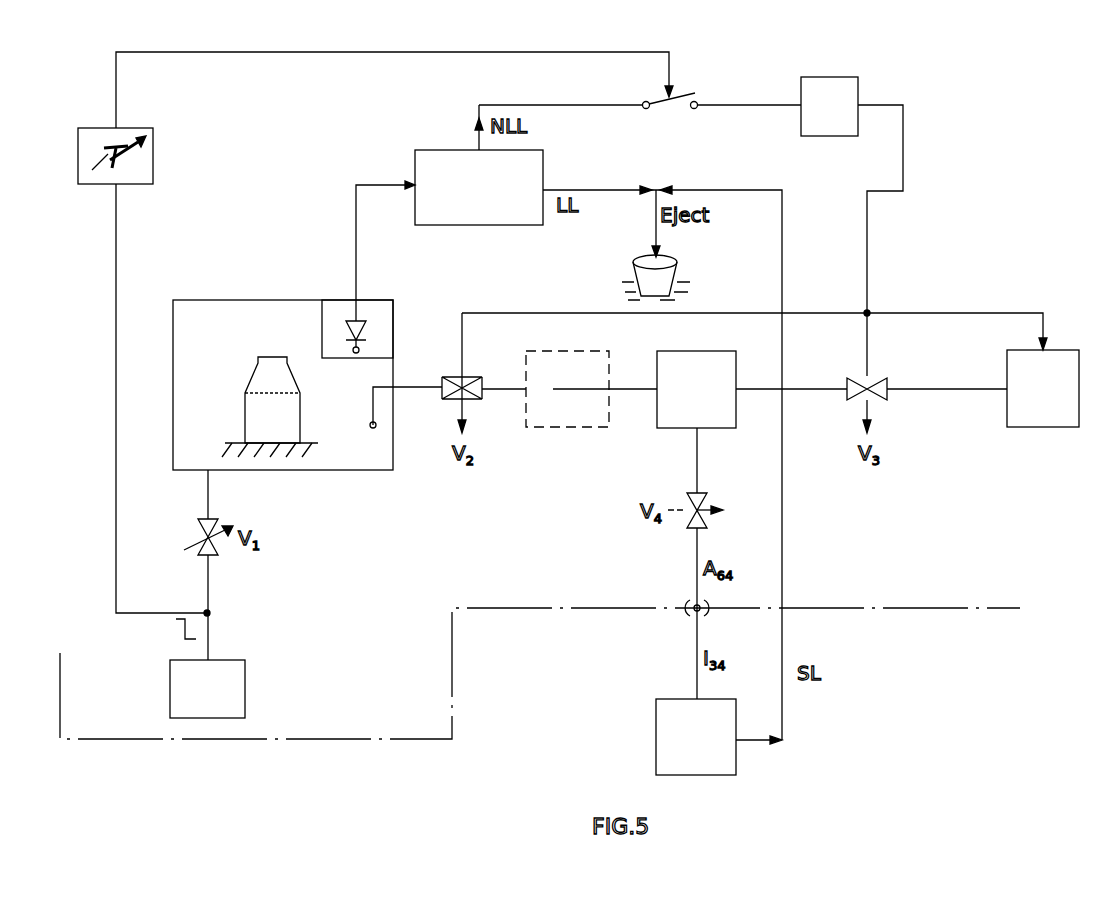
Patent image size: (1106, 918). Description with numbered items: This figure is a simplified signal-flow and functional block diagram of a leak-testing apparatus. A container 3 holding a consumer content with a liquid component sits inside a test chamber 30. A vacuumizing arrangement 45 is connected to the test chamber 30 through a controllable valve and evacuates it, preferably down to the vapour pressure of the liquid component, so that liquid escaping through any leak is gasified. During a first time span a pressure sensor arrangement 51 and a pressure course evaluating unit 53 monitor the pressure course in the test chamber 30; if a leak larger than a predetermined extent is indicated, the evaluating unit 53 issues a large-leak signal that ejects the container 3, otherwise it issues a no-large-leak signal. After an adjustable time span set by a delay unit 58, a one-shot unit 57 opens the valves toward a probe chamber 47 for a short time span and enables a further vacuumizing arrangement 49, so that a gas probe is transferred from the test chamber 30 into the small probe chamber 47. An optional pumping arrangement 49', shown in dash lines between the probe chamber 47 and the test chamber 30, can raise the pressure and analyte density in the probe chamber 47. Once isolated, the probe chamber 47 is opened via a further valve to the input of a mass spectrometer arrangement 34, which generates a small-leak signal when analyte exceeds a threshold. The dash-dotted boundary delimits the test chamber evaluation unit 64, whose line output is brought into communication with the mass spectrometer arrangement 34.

The delay unit 58 is at (153, 154).
The one-shot unit 57 is at (826, 75).
The pressure course evaluating unit 53 is at (479, 187).
The pressure sensor arrangement 51 is at (378, 309).
The test chamber 30 is at (207, 329).
The container 3 is at (302, 410).
The pumping arrangement 49' is at (567, 389).
The probe chamber 47 is at (696, 389).
The vacuumizing arrangement 49 is at (1043, 388).
The vacuumizing arrangement 45 is at (207, 689).
The test chamber evaluation unit 64 is at (400, 701).
The mass spectrometer arrangement 34 is at (656, 738).